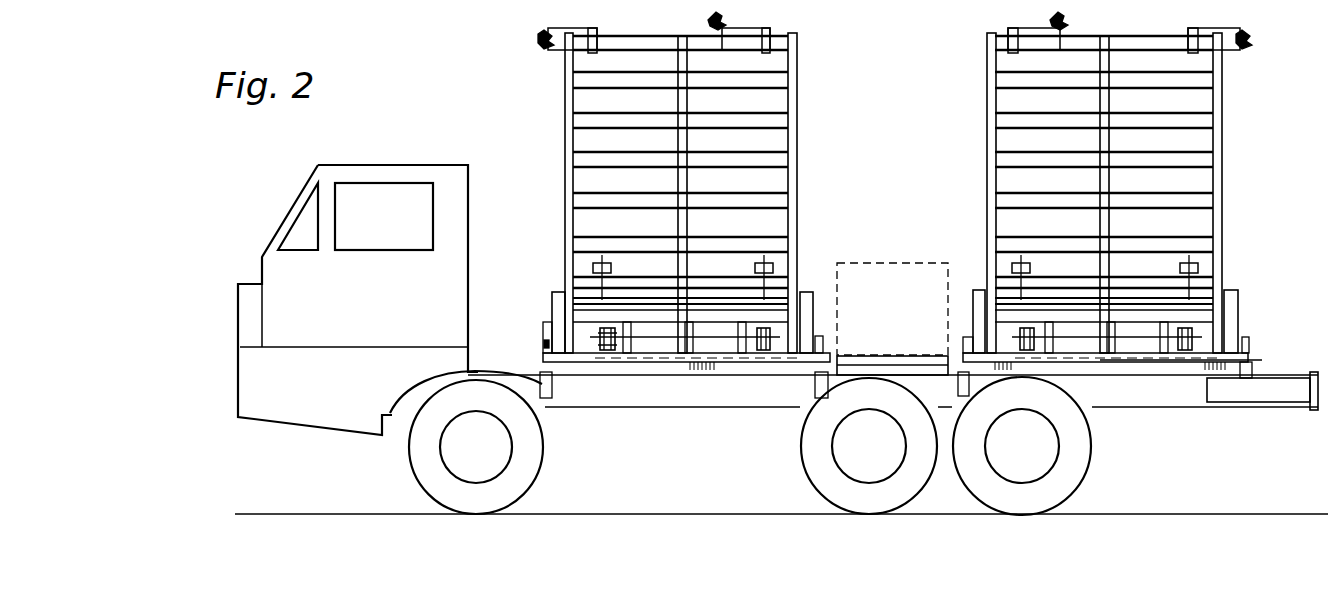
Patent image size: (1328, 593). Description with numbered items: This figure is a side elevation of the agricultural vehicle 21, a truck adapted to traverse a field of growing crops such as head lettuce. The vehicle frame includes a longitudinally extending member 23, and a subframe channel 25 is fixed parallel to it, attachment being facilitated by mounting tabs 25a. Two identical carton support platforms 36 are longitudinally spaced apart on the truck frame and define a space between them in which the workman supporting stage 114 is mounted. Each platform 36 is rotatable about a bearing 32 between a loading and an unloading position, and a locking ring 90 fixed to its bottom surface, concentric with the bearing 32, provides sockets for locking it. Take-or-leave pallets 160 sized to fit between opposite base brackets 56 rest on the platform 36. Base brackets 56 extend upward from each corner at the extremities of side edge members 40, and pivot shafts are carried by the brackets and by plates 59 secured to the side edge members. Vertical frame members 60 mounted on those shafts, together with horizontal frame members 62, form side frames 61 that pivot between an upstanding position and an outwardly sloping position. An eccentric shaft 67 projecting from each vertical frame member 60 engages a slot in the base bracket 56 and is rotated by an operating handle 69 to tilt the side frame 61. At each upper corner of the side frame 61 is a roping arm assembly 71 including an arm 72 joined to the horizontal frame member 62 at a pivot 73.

The agricultural vehicle 21 is at (254, 228).
The longitudinally extending frame member 23 is at (600, 408).
The subframe channel 25 is at (1126, 372).
The mounting tab 25a is at (543, 387).
The bearing 32 is at (722, 365).
The carton support platform 36 is at (543, 349).
The side edge member 40 is at (658, 345).
The base bracket 56 is at (558, 294).
The plate 59 is at (586, 356).
The vertical frame member 60 is at (566, 184).
The side frame 61 is at (566, 132).
The horizontal frame member 62 is at (744, 152).
The shaft 67 is at (706, 298).
The operating handle 69 is at (606, 268).
The roping arm assembly 71 is at (708, 22).
The arm 72 is at (585, 31).
The pivot 73 is at (772, 40).
The locking ring 90 is at (606, 352).
The workman supporting stage 114 is at (905, 262).
The take-or-leave pallet 160 is at (545, 328).